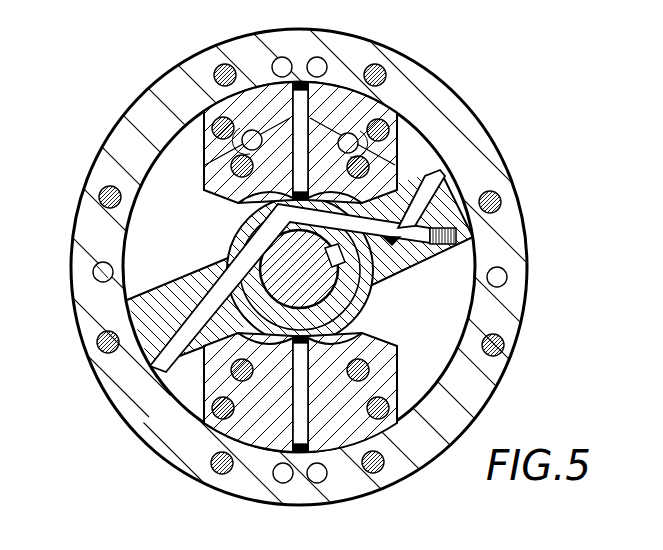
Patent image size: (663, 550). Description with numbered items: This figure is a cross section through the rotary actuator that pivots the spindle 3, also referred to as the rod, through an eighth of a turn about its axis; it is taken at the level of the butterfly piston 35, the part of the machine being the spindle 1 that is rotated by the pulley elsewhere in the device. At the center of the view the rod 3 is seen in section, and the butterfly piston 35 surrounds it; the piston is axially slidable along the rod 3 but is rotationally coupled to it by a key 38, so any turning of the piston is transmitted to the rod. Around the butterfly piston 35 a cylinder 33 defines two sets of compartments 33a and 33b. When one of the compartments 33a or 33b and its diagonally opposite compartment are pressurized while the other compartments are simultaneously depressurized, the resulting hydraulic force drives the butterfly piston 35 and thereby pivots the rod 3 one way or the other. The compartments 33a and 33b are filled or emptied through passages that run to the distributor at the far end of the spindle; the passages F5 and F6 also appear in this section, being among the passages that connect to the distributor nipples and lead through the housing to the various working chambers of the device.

The spindle 1 is at (491, 168).
The spindle 3 is at (266, 236).
The cylinder 33 is at (177, 52).
The compartment 33a is at (412, 155).
The compartment 33b is at (445, 327).
The butterfly piston 35 is at (232, 254).
The key 38 is at (372, 274).
The passage F5 is at (100, 274).
The passage F6 is at (500, 272).